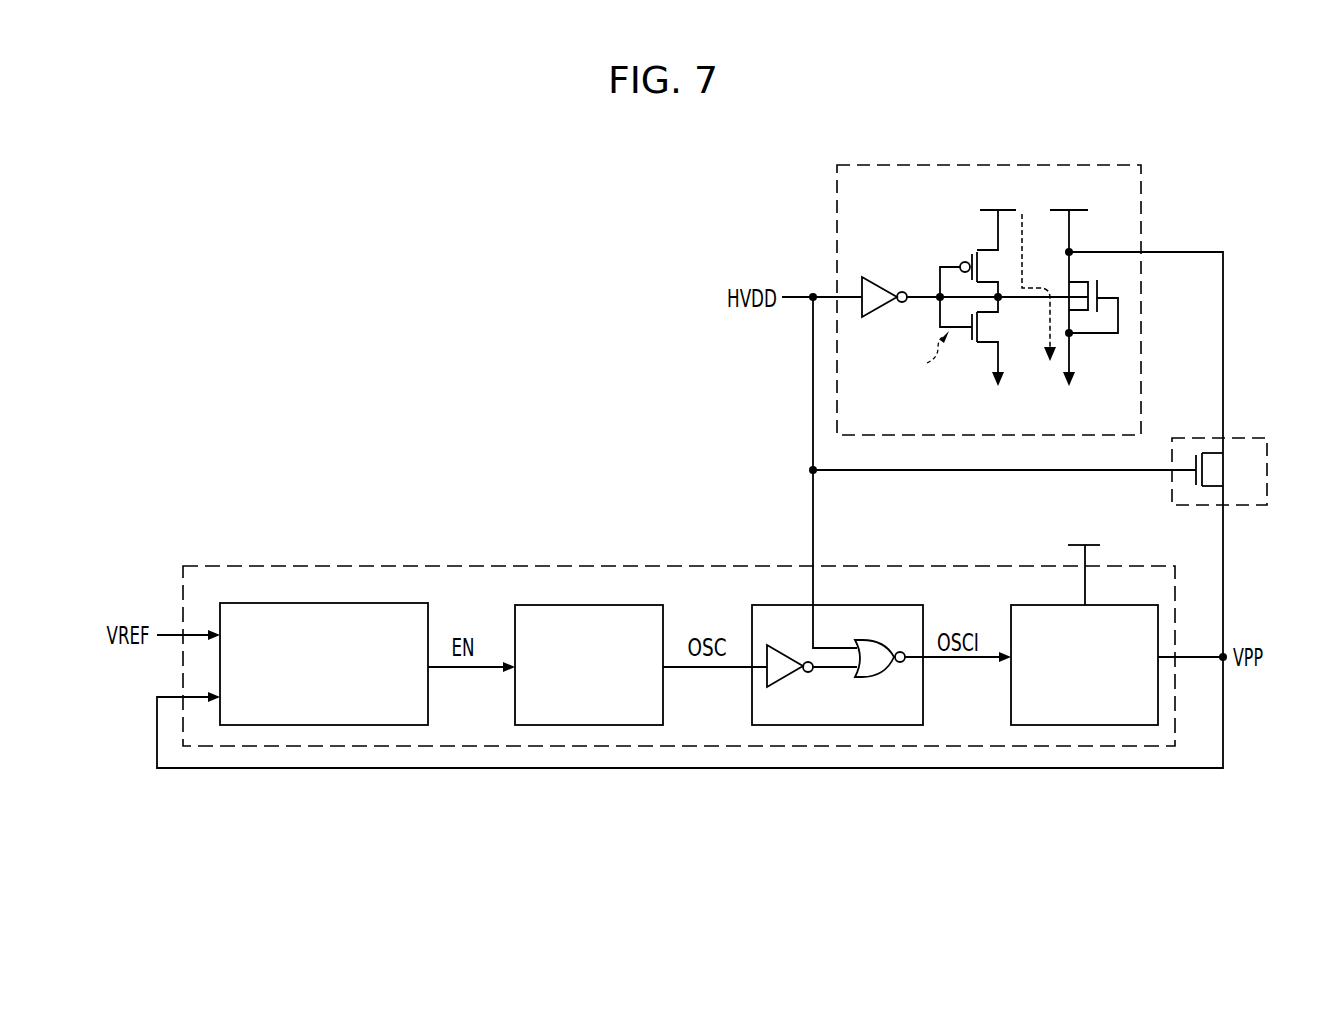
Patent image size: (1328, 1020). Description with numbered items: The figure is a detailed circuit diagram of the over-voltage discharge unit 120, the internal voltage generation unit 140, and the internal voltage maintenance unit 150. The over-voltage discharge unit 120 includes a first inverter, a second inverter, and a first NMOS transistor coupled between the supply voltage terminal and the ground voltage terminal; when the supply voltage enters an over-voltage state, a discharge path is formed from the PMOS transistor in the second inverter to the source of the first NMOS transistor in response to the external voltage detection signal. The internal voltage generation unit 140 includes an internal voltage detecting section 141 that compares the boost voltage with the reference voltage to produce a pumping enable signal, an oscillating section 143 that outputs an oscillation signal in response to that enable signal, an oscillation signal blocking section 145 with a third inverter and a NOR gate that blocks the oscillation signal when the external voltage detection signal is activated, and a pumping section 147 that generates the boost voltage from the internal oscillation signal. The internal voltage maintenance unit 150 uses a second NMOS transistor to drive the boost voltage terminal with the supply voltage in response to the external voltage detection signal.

The over-voltage discharge unit 120 is at (1087, 165).
The internal voltage generation unit 140 is at (207, 565).
The internal voltage detecting section 141 is at (360, 603).
The oscillating section 143 is at (595, 603).
The oscillation signal blocking section 145 is at (843, 603).
The pumping section 147 is at (1107, 603).
The internal voltage maintenance unit 150 is at (1243, 437).